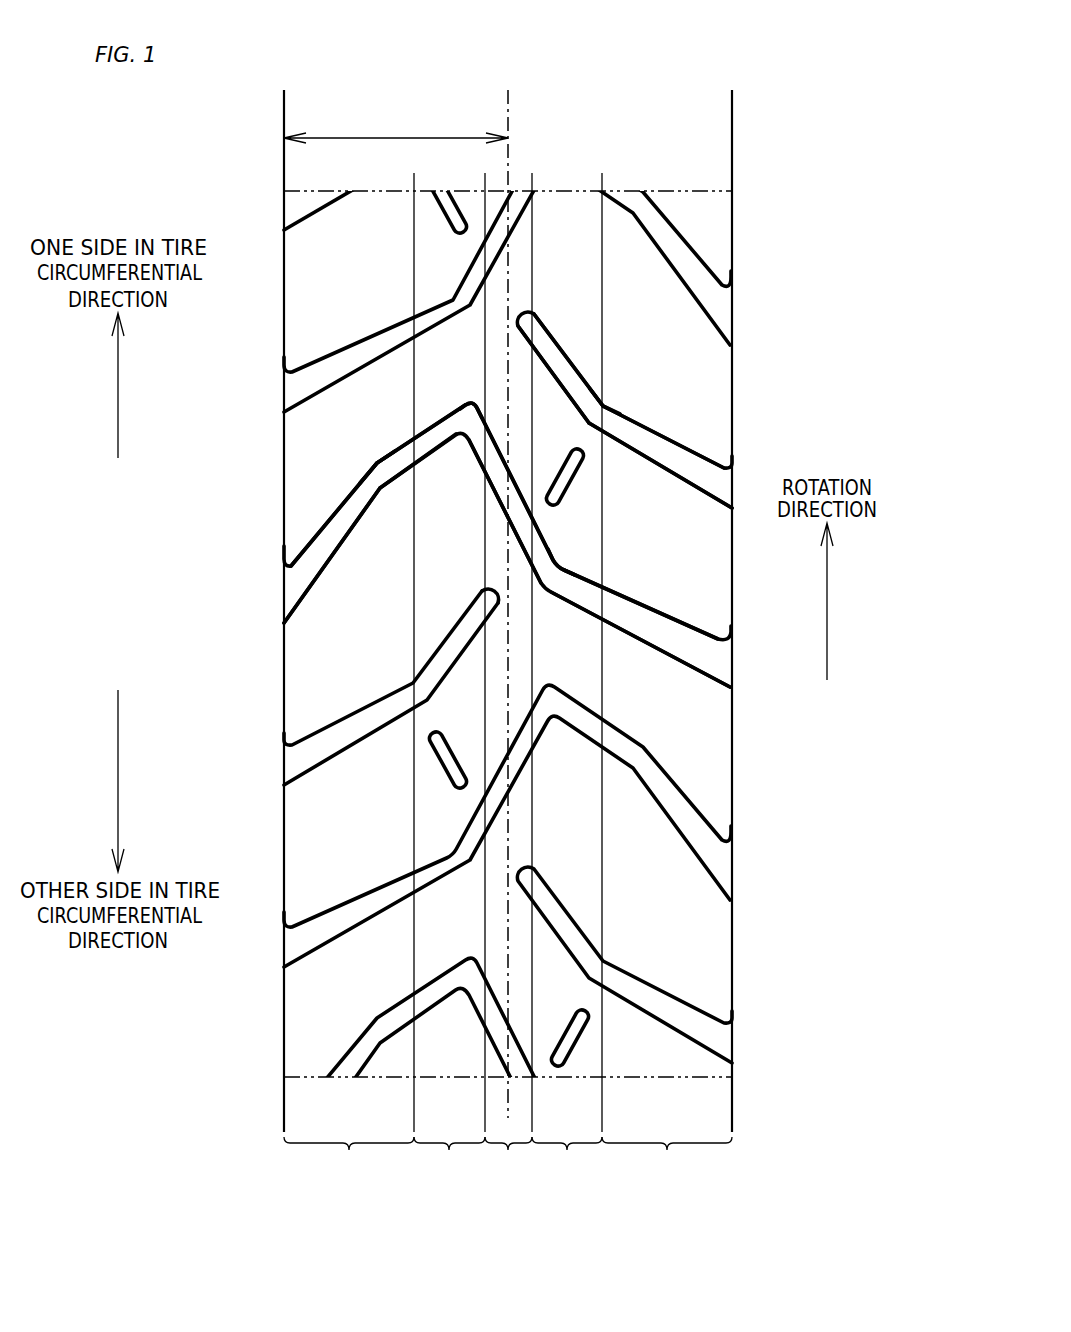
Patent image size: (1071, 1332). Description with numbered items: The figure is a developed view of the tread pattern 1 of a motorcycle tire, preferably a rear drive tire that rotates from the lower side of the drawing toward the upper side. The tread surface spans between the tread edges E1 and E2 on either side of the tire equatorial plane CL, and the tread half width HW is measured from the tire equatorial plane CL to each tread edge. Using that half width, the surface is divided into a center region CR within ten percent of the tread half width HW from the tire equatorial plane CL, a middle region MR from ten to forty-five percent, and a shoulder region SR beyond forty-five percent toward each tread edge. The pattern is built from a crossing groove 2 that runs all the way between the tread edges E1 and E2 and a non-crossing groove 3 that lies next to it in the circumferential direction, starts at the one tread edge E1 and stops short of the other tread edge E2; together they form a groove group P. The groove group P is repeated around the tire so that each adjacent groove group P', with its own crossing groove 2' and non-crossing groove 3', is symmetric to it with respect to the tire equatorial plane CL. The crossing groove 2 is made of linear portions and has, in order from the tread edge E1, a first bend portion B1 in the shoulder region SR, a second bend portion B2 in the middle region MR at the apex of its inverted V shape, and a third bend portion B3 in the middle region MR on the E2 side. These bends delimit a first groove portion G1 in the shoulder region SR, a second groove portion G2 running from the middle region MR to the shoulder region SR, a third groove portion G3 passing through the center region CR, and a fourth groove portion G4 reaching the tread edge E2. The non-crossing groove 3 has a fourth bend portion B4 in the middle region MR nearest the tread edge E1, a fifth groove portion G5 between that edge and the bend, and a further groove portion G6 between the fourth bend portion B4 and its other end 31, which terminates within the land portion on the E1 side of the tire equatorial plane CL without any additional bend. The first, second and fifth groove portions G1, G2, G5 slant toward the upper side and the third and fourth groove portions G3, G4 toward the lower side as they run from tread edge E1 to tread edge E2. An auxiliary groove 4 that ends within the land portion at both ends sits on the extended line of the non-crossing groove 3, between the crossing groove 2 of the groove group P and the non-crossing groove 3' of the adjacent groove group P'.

The tread pattern 1 is at (758, 192).
The crossing groove 2 is at (538, 790).
The crossing groove 2' is at (484, 558).
The non-crossing groove 3 is at (357, 688).
The non-crossing groove 3' is at (624, 687).
The end of the non-crossing groove 31 is at (490, 592).
The auxiliary groove 4 is at (568, 480).
The first bend portion B1 is at (367, 470).
The second bend portion B2 is at (465, 400).
The third bend portion B3 is at (458, 302).
The fourth bend portion B4 is at (595, 407).
The first groove portion G1 is at (355, 532).
The second groove portion G2 is at (427, 453).
The third groove portion G3 is at (506, 450).
The fourth groove portion G4 is at (396, 332).
The fifth groove portion G5 is at (647, 438).
The sixth groove portion G6 is at (558, 380).
The groove group P is at (295, 632).
The groove group P' is at (495, 673).
The tread edge E1 is at (278, 598).
The tread edge E2 is at (730, 598).
The tire equatorial plane CL is at (508, 591).
The tread half width HW is at (396, 128).
The shoulder region SR is at (508, 1159).
The middle region MR is at (508, 1159).
The center region CR is at (508, 1159).